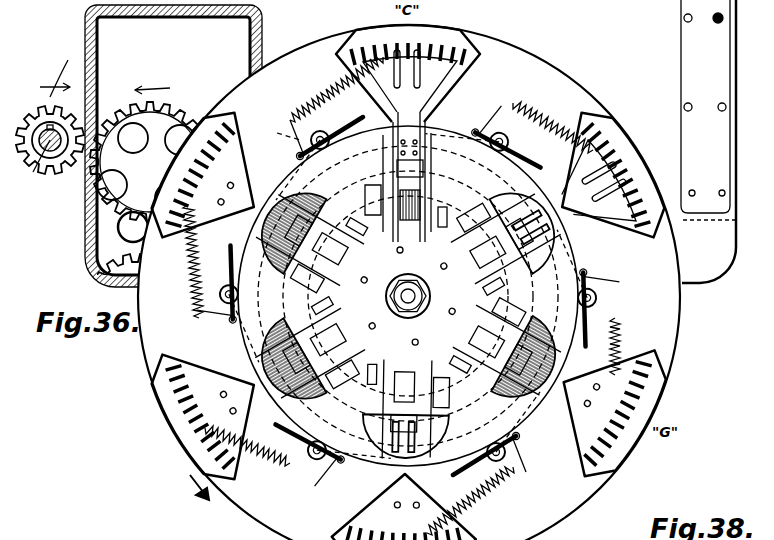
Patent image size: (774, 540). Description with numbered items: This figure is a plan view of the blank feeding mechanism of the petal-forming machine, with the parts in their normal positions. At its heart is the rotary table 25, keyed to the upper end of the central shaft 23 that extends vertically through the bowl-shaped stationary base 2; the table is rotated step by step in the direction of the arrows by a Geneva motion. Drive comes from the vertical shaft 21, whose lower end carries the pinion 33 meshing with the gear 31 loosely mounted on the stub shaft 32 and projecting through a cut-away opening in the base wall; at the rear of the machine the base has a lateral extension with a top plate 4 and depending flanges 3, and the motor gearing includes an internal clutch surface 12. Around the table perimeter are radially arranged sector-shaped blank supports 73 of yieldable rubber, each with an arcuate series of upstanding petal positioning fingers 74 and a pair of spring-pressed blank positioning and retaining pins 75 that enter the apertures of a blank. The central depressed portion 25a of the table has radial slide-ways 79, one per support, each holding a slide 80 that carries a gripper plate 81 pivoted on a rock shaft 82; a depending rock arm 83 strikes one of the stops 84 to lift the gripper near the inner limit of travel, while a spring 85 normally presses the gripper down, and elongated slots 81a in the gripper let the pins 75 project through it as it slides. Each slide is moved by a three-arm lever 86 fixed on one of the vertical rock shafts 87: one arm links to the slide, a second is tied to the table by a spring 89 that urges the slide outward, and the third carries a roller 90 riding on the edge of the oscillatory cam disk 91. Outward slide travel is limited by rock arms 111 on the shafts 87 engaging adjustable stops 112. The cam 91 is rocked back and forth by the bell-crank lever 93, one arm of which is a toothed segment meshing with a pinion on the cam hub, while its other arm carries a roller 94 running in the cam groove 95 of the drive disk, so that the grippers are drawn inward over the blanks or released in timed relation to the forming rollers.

The stationary base 2 is at (34, 120).
The depending flanges 3 is at (157, 20).
The top plate 4 is at (676, 141).
The internal clutch surface 12 is at (421, 302).
The vertical shaft 21 is at (42, 160).
The central shaft 23 is at (410, 303).
The rotary table 25 is at (600, 489).
The central depressed portion 25a is at (410, 286).
The gear 31 is at (185, 112).
The stub shaft 32 is at (108, 210).
The pinion 33 is at (55, 70).
The blank support 73 is at (292, 106).
The petal positioning fingers 74 is at (370, 47).
The blank positioning and retaining pins 75 is at (392, 86).
The slide-ways 79 is at (410, 291).
The slide 80 is at (423, 290).
The gripper plate 81 is at (437, 80).
The elongated slots 81a is at (345, 56).
The rock shaft 82 is at (407, 289).
The rock arm 83 is at (355, 200).
The stops 84 is at (407, 296).
The spring 85 is at (425, 165).
The three-arm lever 86 is at (333, 468).
The vertical rock shafts 87 is at (226, 306).
The spring 89 is at (630, 322).
The roller 90 is at (420, 480).
The oscillatory cam disk 91 is at (408, 296).
The bell-crank lever 93 is at (320, 103).
The roller 94 is at (186, 288).
The cam groove 95 is at (267, 137).
The rock arms 111 is at (376, 289).
The adjustable stops 112 is at (419, 296).